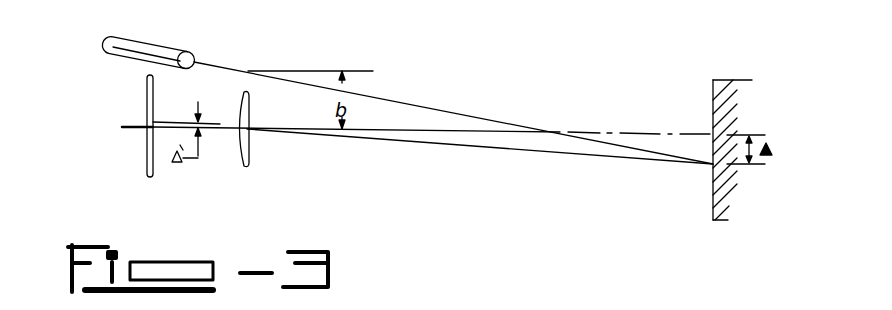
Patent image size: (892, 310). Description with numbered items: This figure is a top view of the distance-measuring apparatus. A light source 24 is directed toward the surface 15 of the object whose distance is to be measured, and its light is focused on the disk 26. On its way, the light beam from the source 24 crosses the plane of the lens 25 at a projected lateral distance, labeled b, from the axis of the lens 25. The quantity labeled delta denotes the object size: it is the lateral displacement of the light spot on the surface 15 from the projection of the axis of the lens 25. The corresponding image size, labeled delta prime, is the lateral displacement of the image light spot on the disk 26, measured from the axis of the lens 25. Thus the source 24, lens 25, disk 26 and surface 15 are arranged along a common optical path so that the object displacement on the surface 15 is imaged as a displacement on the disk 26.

The light source 24 is at (162, 47).
The lens 25 is at (250, 146).
The disk 26 is at (147, 165).
The surface 15 is at (713, 113).